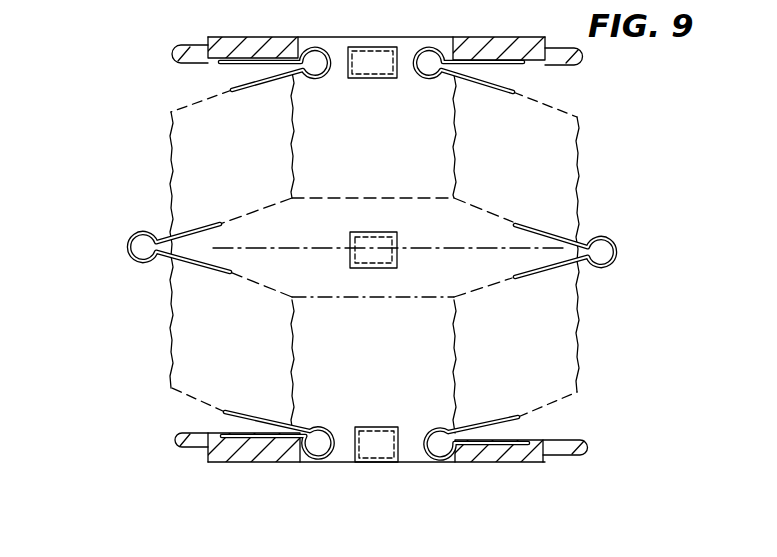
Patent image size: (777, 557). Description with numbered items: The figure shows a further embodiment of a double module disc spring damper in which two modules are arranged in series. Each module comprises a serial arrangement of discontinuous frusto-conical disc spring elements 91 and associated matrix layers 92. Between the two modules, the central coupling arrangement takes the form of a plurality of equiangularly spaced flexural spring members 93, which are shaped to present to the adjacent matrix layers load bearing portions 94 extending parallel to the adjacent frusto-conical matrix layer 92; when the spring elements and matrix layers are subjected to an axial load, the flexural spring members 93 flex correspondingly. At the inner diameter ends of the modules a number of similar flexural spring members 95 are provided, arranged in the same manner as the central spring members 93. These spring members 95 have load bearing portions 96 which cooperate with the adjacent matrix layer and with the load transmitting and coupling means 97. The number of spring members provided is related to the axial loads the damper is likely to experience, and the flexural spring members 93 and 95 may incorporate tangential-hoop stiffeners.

The frusto-conical disc spring element 91 is at (566, 135).
The matrix layer 92 is at (568, 187).
The flexural spring member 93 is at (132, 262).
The load bearing portion 94 is at (213, 223).
The flexural spring member 95 is at (387, 66).
The load bearing portion 96 is at (222, 73).
The load transmitting and coupling means 97 is at (176, 53).